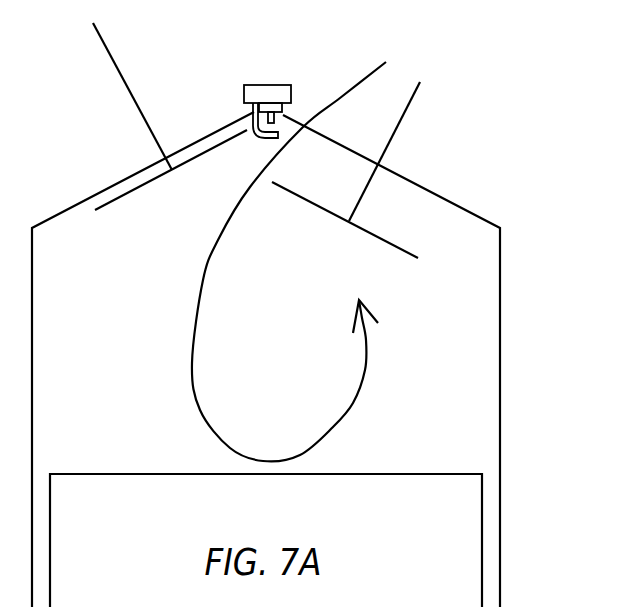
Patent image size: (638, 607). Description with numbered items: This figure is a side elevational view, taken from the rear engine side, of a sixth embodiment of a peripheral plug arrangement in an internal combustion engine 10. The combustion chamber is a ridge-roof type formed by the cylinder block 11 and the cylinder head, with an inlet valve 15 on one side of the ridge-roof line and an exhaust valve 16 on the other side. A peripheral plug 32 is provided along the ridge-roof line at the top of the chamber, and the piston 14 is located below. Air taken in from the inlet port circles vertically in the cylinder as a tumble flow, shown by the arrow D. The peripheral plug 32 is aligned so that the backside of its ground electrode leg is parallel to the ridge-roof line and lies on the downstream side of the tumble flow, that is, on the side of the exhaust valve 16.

The internal combustion engine 10 is at (543, 138).
The cylinder block 11 is at (500, 369).
The piston 14 is at (428, 542).
The inlet valve 15 is at (373, 232).
The exhaust valve 16 is at (132, 190).
The peripheral plug 32 is at (270, 84).
The tumble flow arrow D is at (190, 337).